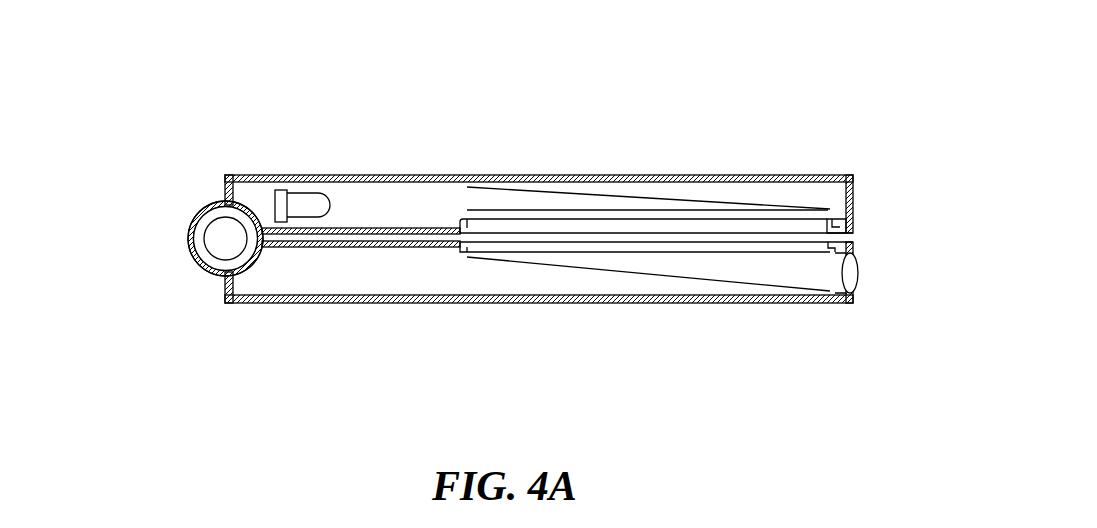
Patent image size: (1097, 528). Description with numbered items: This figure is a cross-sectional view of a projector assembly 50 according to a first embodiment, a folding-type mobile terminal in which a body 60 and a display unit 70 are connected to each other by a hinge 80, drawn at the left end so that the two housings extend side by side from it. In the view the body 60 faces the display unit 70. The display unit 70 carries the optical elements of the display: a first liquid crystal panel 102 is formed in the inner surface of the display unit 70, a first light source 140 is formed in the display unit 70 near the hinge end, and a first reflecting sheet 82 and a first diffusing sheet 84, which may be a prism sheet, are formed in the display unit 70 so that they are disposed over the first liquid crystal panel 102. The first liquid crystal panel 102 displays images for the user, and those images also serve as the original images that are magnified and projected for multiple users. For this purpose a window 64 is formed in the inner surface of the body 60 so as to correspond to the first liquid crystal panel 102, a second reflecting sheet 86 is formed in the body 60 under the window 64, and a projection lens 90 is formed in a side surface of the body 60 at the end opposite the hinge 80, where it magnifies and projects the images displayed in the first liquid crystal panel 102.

The projector assembly 50 is at (200, 158).
The body 60 is at (400, 312).
The window 64 is at (747, 253).
The display unit 70 is at (541, 160).
The hinge 80 is at (200, 262).
The first reflecting sheet 82 is at (648, 192).
The first diffusing sheet 84 is at (728, 210).
The second reflecting sheet 86 is at (630, 275).
The projection lens 90 is at (853, 273).
The first liquid crystal panel 102 is at (835, 227).
The first light source 140 is at (305, 192).